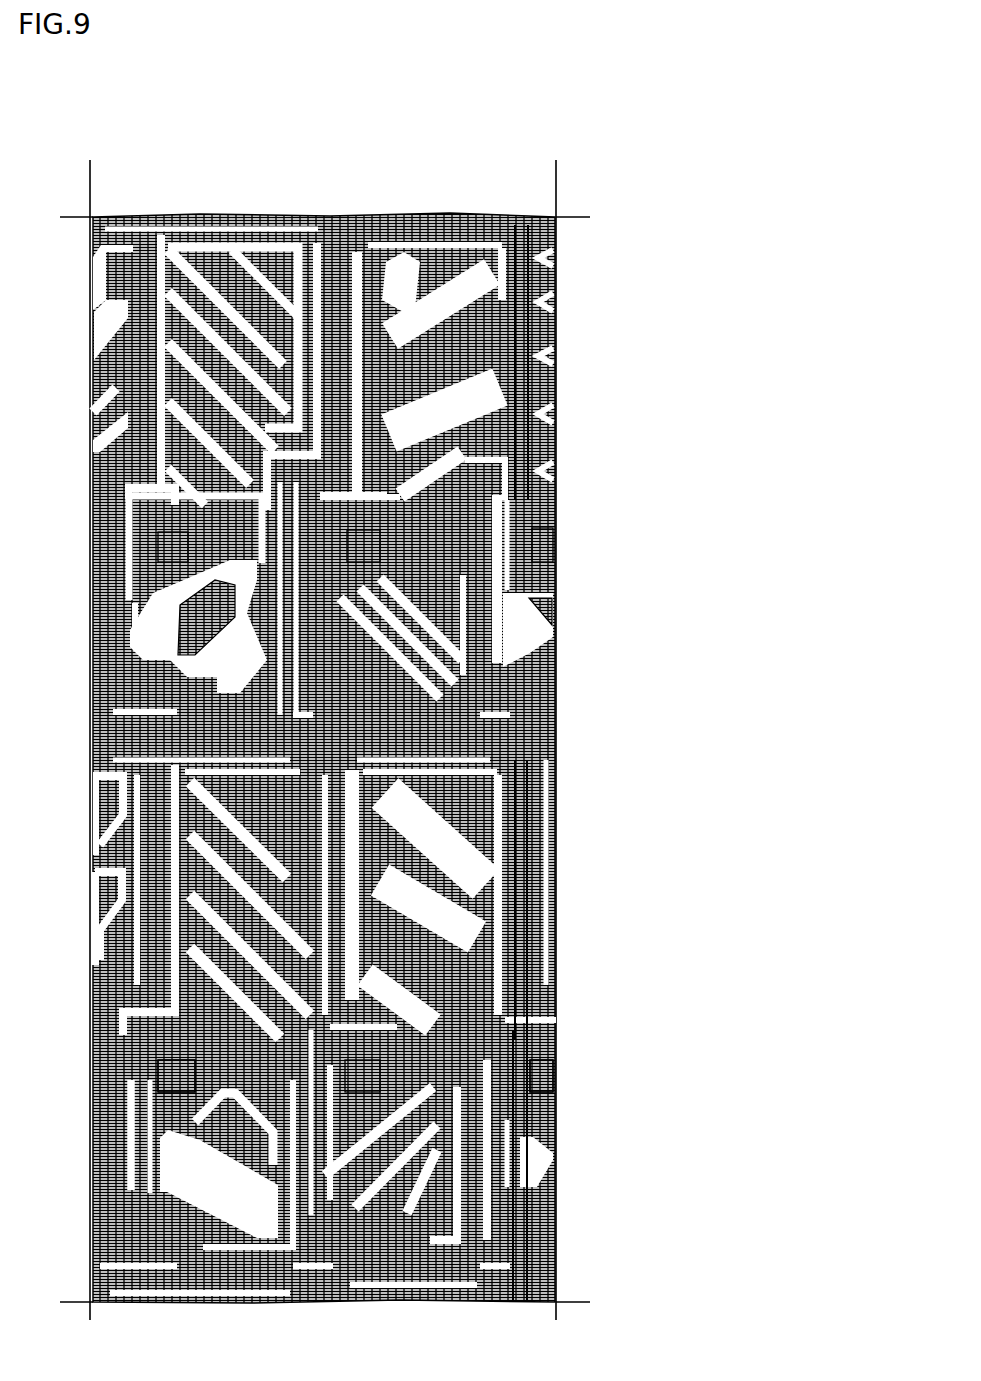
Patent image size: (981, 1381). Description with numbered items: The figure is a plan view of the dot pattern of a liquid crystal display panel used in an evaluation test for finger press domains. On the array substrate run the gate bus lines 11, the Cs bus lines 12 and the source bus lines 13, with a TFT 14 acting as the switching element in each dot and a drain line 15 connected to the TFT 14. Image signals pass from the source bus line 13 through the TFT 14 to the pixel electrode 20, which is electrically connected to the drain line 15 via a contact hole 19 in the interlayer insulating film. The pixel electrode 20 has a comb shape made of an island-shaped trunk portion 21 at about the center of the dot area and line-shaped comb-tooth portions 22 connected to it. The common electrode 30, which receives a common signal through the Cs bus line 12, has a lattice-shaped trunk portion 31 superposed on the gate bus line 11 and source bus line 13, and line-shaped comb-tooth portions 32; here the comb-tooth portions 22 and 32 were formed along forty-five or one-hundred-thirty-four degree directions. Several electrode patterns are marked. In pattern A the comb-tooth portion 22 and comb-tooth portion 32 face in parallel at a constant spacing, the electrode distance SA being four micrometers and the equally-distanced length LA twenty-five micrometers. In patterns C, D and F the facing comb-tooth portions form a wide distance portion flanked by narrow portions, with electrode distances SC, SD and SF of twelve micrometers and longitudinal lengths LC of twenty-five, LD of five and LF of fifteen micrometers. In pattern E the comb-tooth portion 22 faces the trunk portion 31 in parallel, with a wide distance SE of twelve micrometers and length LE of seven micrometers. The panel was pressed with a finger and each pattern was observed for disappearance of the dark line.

The pattern A is at (230, 252).
The distance S_A SA is at (280, 323).
The pattern D is at (378, 252).
The distance S_D SD is at (418, 236).
The distance L_A LA is at (232, 328).
The distance L_D LD is at (420, 312).
The comb-tooth portion 32 is at (440, 372).
The trunk portion 31 is at (440, 405).
The common electrode 30 is at (656, 348).
The comb-tooth portion 22 is at (440, 468).
The trunk portion 21 is at (442, 503).
The pixel electrode 20 is at (656, 440).
The distance L_E LE is at (170, 625).
The pattern E is at (205, 655).
The distance S_E SE is at (222, 682).
The pattern F is at (466, 787).
The distance S_F SF is at (458, 820).
The distance L_F LF is at (470, 857).
The pattern C is at (438, 926).
The distance S_C SC is at (462, 955).
The distance L_C LC is at (460, 985).
The contact hole 19 is at (160, 1076).
The source bus line 13 is at (135, 1140).
The drain line 15 is at (128, 1190).
The TFT 14 is at (126, 1265).
The Cs bus line 12 is at (548, 1075).
The gate bus line 11 is at (548, 1270).